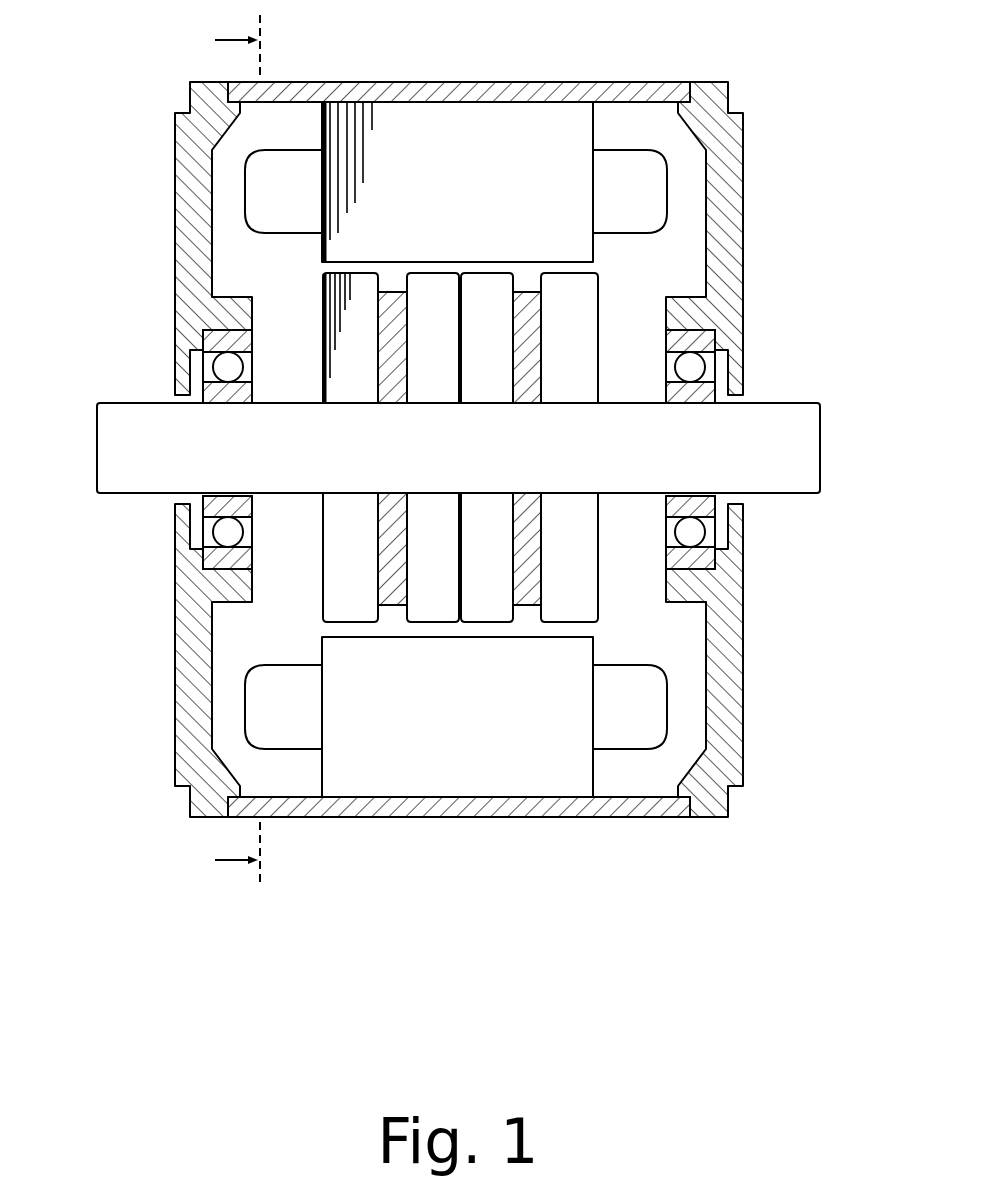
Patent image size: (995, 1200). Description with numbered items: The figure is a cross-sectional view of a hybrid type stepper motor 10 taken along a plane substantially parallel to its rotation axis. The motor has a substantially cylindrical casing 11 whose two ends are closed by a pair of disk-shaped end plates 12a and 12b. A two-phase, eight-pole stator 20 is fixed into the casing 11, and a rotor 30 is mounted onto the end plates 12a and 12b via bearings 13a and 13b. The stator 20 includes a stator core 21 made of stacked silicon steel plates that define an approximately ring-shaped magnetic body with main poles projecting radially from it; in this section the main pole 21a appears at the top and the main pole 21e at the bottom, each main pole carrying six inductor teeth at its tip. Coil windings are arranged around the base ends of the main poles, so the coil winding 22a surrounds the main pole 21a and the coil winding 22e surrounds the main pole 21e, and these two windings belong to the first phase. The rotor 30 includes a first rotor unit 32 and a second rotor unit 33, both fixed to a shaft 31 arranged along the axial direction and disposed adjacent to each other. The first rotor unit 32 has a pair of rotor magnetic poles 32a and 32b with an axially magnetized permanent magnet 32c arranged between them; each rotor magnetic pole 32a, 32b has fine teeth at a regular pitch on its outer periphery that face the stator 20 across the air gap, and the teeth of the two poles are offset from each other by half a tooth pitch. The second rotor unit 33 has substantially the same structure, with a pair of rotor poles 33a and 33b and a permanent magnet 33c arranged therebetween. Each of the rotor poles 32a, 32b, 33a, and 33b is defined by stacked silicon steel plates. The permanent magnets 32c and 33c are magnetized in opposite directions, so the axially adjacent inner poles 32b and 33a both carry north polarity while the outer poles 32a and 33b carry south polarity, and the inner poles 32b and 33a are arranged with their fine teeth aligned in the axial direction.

The hybrid type stepper motor 10 is at (621, 60).
The casing 11 is at (450, 92).
The end plate 12a is at (183, 257).
The end plate 12b is at (733, 280).
The bearing 13a is at (226, 367).
The bearing 13b is at (692, 367).
The stator 20 is at (238, 182).
The stator core 21 is at (580, 408).
The main pole 21a is at (585, 250).
The main pole 21e is at (583, 647).
The coil winding 22a is at (645, 193).
The coil winding 22e is at (655, 705).
The rotor 30 is at (373, 606).
The shaft 31 is at (118, 485).
The first rotor unit 32 is at (371, 606).
The rotor magnetic pole 32a is at (344, 603).
The rotor magnetic pole 32b is at (435, 613).
The permanent magnet 32c is at (393, 605).
The second rotor unit 33 is at (551, 606).
The rotor pole 33a is at (484, 613).
The rotor pole 33b is at (568, 610).
The permanent magnet 33c is at (527, 605).